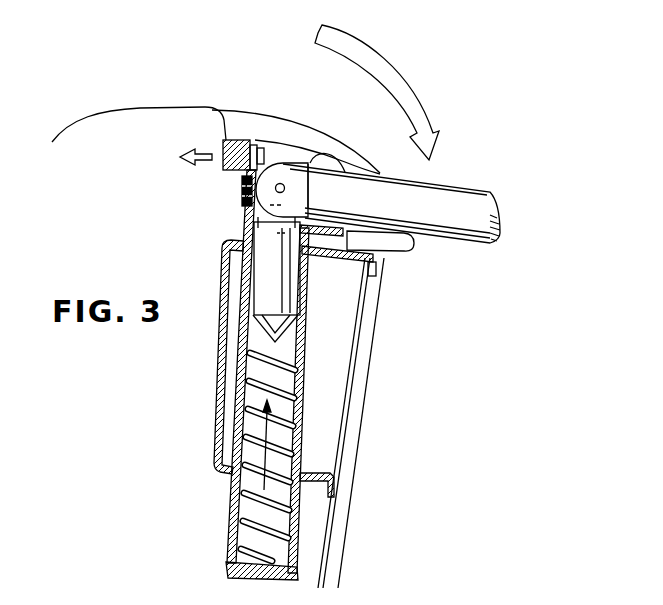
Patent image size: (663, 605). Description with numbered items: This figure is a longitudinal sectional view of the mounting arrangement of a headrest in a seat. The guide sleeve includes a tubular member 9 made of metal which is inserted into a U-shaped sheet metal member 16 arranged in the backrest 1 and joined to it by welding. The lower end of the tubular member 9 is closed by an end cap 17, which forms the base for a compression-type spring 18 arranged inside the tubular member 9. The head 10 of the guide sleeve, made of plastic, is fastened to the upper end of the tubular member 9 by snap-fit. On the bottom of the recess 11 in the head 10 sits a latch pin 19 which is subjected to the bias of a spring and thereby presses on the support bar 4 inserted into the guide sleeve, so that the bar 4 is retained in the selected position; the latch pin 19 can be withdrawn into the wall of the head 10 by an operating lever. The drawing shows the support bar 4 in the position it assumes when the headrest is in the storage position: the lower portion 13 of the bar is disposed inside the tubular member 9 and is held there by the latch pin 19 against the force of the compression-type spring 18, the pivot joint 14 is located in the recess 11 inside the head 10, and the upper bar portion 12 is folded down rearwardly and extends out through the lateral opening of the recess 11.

The backrest 1 is at (131, 118).
The latch pin 19 is at (256, 136).
The head 10 is at (290, 138).
The recess 11 is at (315, 158).
The upper bar portion 12 is at (461, 200).
The support bar 4 is at (466, 250).
The pivot joint 14 is at (250, 189).
The lower portion of the bar 13 is at (290, 291).
The tubular member 9 is at (228, 511).
The U-shaped sheet metal member 16 is at (217, 401).
The compression-type spring 18 is at (257, 533).
The end cap 17 is at (248, 568).